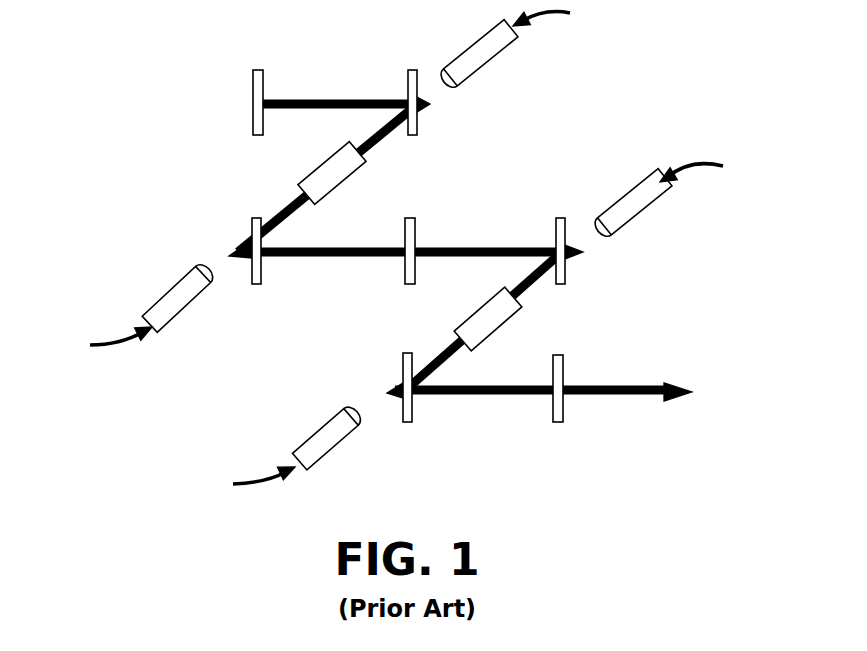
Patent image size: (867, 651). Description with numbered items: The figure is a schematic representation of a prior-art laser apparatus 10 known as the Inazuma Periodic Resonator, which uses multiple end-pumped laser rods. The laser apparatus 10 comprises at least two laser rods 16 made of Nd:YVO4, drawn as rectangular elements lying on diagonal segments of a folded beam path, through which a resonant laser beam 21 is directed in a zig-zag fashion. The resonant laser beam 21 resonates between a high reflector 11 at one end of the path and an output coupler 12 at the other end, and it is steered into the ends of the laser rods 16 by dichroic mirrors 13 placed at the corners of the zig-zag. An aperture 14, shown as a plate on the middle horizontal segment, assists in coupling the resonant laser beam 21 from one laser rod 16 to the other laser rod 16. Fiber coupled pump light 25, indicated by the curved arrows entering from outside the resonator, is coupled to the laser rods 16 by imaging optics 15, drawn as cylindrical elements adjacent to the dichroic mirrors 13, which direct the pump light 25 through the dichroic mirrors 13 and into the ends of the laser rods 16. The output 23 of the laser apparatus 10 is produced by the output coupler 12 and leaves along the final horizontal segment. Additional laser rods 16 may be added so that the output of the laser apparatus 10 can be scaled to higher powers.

The laser apparatus 10 is at (381, 28).
The high reflector 11 is at (253, 93).
The output coupler 12 is at (563, 415).
The dichroic mirrors 13 is at (413, 127).
The aperture 14 is at (415, 228).
The imaging optics 15 is at (482, 55).
The laser rods 16 is at (327, 170).
The resonant laser beam 21 is at (335, 256).
The output 23 is at (673, 388).
The pump light 25 is at (557, 15).